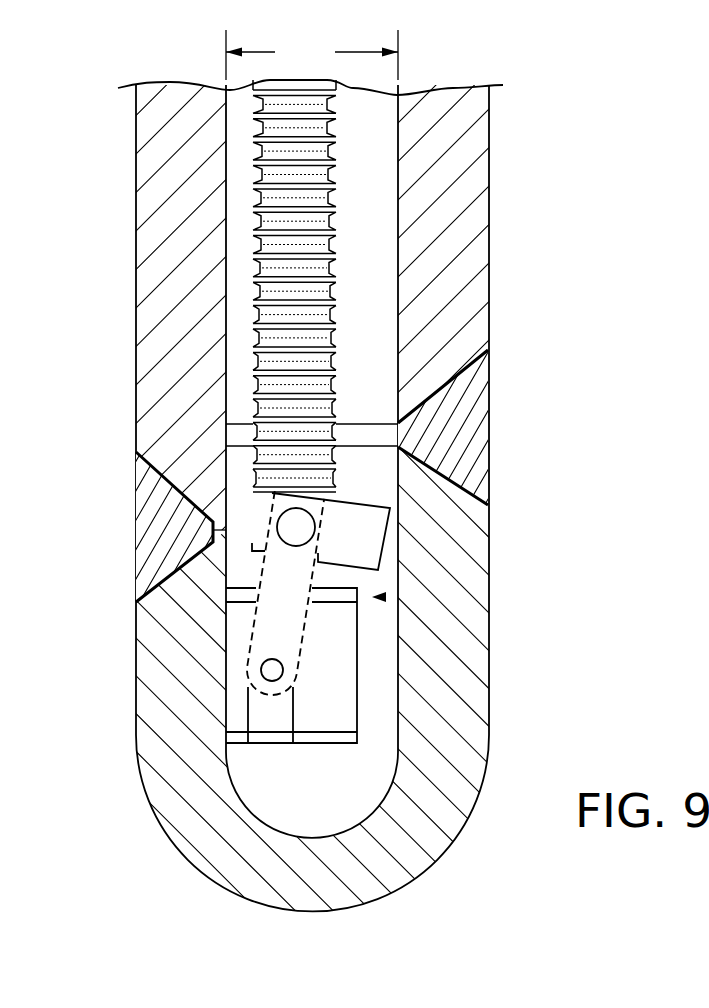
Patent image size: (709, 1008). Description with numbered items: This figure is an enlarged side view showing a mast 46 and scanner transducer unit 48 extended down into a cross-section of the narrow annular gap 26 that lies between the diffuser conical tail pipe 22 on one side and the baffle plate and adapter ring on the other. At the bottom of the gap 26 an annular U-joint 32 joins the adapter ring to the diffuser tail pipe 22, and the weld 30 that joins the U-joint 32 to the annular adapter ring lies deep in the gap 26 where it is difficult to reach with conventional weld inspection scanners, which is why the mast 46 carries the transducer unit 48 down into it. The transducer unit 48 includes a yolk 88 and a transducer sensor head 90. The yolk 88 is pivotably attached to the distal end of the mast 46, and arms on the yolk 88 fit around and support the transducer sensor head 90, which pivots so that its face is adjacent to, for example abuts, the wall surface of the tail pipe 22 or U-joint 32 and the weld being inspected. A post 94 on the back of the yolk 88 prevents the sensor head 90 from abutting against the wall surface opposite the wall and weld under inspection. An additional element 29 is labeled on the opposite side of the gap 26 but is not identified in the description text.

The diffuser conical tail pipe 22 is at (136, 270).
The annular gap 26 is at (312, 55).
The mast 46 is at (338, 237).
The weld 30 is at (455, 417).
The left wedge 29 is at (136, 534).
The post 94 is at (360, 533).
The scanner transducer unit 48 is at (372, 597).
The yolk 88 is at (277, 615).
The transducer sensor head 90 is at (335, 682).
The U-joint 32 is at (430, 840).